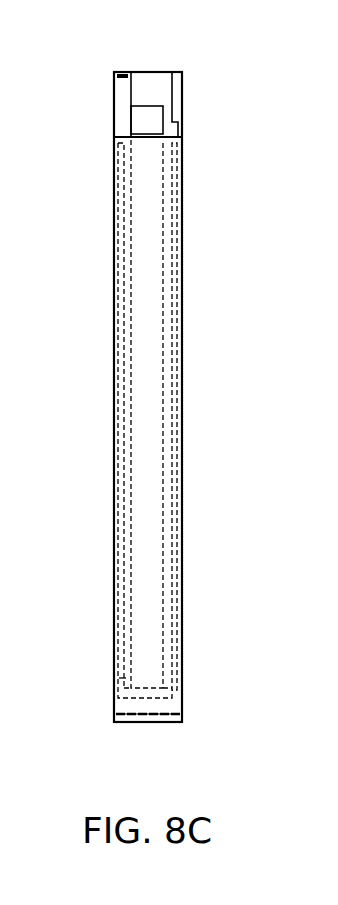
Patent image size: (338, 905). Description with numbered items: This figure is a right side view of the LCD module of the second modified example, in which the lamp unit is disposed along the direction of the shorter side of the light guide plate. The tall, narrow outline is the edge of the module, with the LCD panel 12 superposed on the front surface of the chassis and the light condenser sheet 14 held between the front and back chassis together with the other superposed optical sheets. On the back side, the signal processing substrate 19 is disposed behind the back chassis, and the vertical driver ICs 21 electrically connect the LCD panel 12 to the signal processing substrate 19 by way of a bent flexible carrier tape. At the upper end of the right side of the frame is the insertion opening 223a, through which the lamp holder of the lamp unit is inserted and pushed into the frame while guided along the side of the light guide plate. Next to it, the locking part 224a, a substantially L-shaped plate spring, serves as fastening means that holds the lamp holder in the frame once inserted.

The LCD panel 12 is at (120, 340).
The light condenser sheet 14 is at (0, 100).
The signal processing substrate 19 is at (175, 367).
The vertical driver ICs 21 is at (150, 700).
The insertion opening 223a is at (140, 119).
The locking part 224a is at (175, 103).